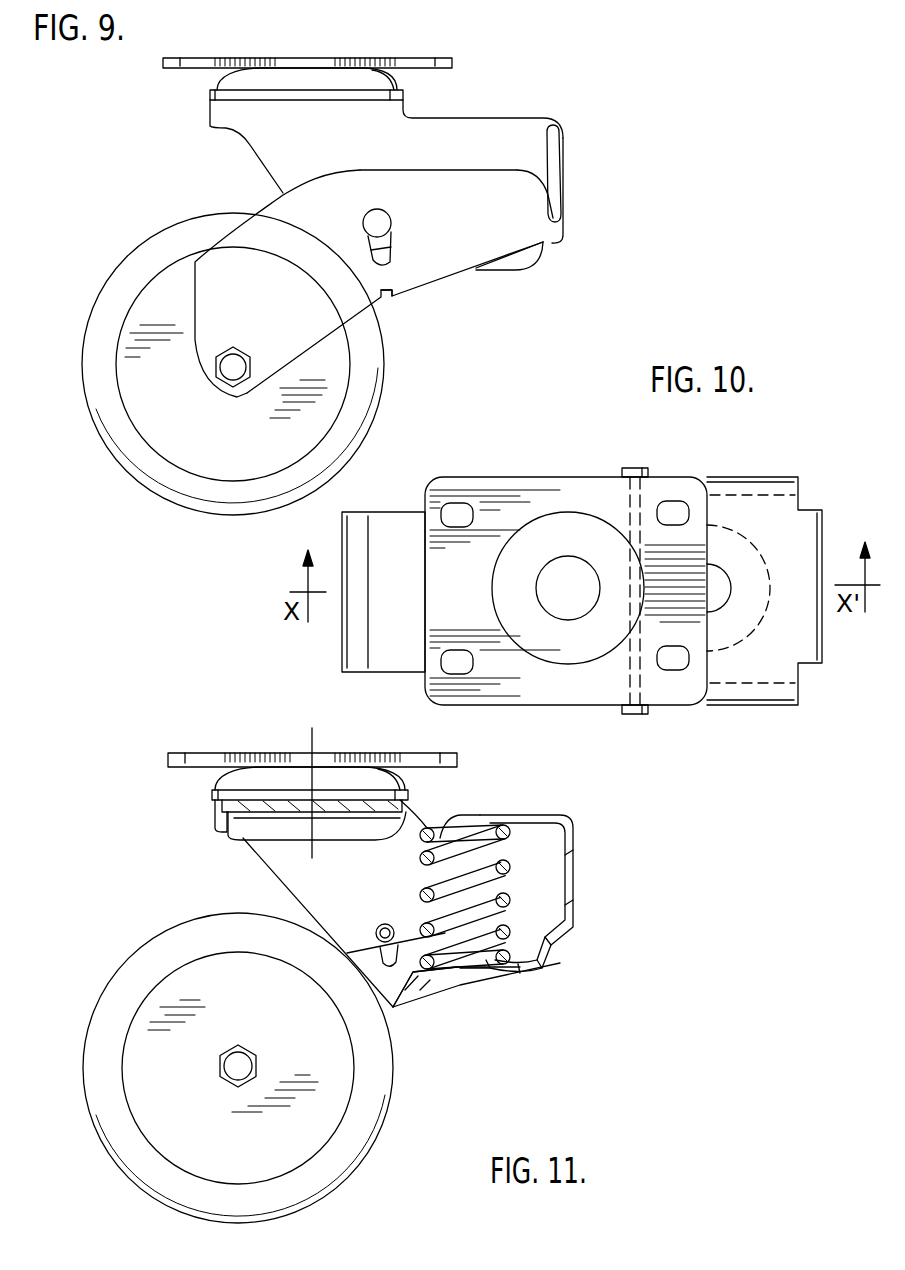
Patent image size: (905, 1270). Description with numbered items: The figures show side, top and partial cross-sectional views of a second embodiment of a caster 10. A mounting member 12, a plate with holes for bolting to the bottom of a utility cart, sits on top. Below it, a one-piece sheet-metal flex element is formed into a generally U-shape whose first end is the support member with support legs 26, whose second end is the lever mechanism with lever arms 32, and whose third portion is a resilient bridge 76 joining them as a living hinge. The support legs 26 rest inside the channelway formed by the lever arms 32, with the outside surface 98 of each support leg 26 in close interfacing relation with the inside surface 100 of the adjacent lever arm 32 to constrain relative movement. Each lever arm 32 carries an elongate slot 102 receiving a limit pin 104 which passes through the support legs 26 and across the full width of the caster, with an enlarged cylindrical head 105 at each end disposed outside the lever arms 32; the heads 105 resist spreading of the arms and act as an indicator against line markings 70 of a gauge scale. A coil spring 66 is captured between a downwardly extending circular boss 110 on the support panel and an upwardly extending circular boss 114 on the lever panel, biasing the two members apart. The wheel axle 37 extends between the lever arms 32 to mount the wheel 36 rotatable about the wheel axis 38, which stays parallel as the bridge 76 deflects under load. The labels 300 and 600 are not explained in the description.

In FIG. 9, the caster 10 is at (380, 210).
In FIG. 9, the mounting member 12 is at (432, 54).
In FIG. 10, the mounting member 12 is at (525, 490).
In FIG. 11, the mounting member 12 is at (185, 755).
In FIG. 9, the support leg 26 is at (386, 130).
In FIG. 11, the support leg 26 is at (310, 825).
In FIG. 9, the lever arm 32 is at (374, 283).
In FIG. 9, the wheel 36 is at (115, 435).
In FIG. 10, the wheel 36 is at (395, 655).
In FIG. 11, the wheel 36 is at (125, 1152).
In FIG. 9, the wheel axle 37 is at (220, 370).
In FIG. 9, the wheel axis 38 is at (232, 370).
In FIG. 11, the coil spring 66 is at (523, 855).
In FIG. 9, the line markings 70 is at (397, 300).
In FIG. 9, the resilient bridge 76 is at (567, 170).
In FIG. 11, the resilient bridge 76 is at (573, 880).
In FIG. 9, the outside surface 98 is at (483, 167).
In FIG. 9, the inside surface 100 is at (357, 228).
In FIG. 11, the inside surface 100 is at (297, 908).
In FIG. 9, the elongate slot 102 is at (408, 245).
In FIG. 10, the limit pin 104 is at (630, 662).
In FIG. 11, the limit pin 104 is at (377, 930).
In FIG. 10, the enlarged cylindrical head 105 is at (630, 468).
In FIG. 11, the circular boss 110 is at (453, 815).
In FIG. 11, the circular boss 114 is at (460, 970).
In FIG. 9, the alternate pin 300 is at (358, 250).
In FIG. 9, the alternate pin 600 is at (385, 289).